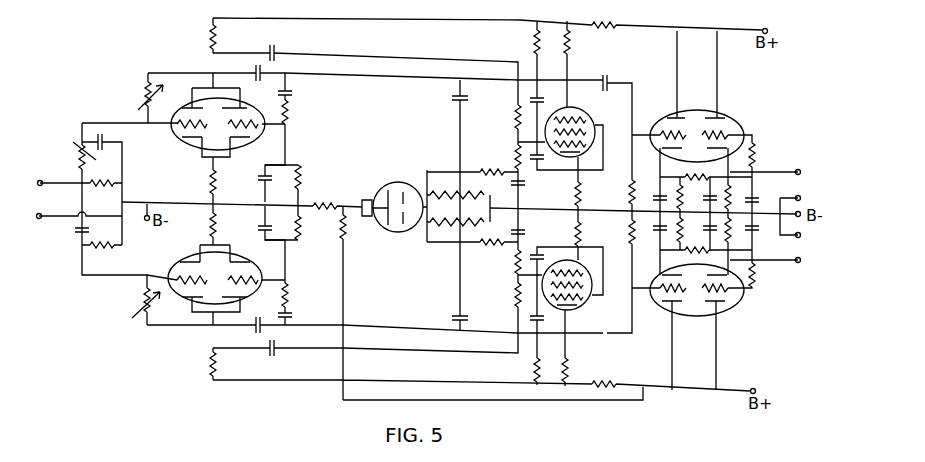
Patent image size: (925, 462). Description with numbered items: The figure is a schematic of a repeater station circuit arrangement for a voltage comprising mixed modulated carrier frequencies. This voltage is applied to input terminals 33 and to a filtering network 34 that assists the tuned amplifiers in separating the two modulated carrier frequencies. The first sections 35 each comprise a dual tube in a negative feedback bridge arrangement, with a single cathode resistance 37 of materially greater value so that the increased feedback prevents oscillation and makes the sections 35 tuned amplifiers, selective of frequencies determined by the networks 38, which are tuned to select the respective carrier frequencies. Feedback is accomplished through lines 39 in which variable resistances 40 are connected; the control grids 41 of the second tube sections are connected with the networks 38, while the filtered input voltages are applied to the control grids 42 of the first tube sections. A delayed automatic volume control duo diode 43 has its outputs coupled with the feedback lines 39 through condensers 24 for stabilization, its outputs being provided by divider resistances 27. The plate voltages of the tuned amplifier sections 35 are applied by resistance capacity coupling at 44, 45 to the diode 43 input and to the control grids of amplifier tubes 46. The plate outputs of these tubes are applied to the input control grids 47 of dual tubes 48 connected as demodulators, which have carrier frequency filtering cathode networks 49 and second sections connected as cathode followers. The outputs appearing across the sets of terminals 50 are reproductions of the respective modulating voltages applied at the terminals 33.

The condensers 24 is at (458, 92).
The divider resistances 27 is at (472, 214).
The input terminals 33 is at (42, 187).
The filtering network 34 is at (71, 146).
The first sections 35 is at (193, 66).
The cathode resistance 37 is at (211, 183).
The networks 38 is at (299, 166).
The feedback lines 39 is at (154, 72).
The variable resistances 40 is at (147, 95).
The control grids 41 is at (249, 125).
The control grids 42 is at (177, 130).
The duo diode 43 is at (393, 193).
The resistance capacity coupling 44 is at (216, 47).
The resistance capacity coupling 45 is at (277, 49).
The amplifier tubes 46 is at (586, 115).
The input control grids 47 is at (633, 208).
The dual tubes 48 is at (735, 320).
The cathode networks 49 is at (724, 189).
The terminals 50 is at (806, 171).